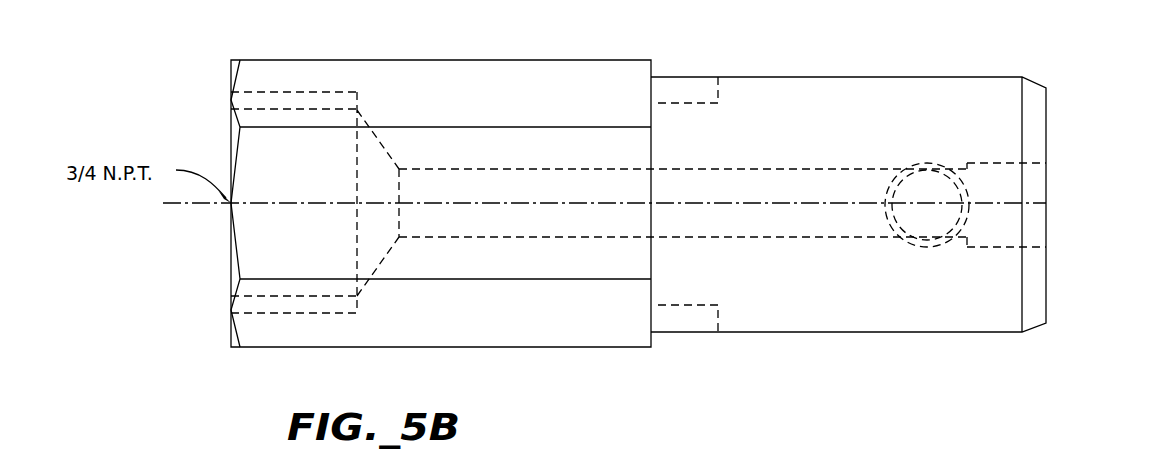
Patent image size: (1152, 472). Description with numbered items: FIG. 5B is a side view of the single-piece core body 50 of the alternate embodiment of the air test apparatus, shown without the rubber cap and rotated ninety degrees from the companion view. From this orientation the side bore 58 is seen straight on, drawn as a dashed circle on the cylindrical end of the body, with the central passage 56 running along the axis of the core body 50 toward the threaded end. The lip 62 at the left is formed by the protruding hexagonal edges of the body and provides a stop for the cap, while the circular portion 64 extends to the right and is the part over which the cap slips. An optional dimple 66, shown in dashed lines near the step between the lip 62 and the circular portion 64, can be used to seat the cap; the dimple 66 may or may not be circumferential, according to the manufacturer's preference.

The single-piece core body 50 is at (681, 225).
The central bore 56 is at (1054, 204).
The side bore 58 is at (932, 225).
The lip 62 is at (656, 66).
The circular portion 64 is at (860, 77).
The dimple 66 is at (685, 88).